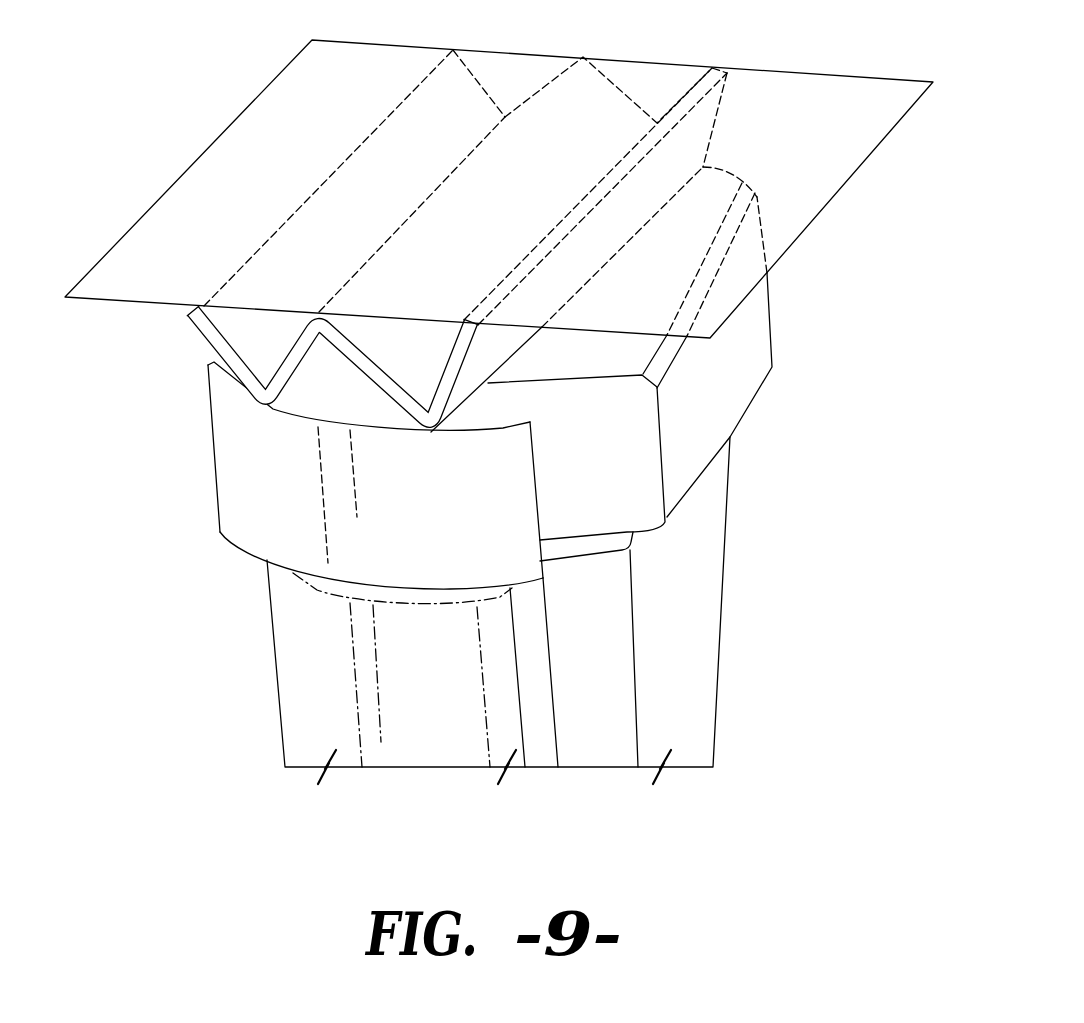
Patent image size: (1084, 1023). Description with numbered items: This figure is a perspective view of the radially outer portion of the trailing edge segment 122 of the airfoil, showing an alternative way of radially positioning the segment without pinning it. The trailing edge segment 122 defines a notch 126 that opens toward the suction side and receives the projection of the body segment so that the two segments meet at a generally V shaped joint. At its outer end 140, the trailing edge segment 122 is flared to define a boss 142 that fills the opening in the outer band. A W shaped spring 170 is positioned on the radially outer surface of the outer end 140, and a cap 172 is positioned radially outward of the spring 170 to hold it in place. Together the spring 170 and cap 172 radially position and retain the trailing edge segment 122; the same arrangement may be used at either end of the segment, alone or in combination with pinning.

The trailing edge segment 122 is at (682, 599).
The notch 126 is at (566, 721).
The outer end 140 is at (818, 332).
The boss 142 is at (242, 492).
The W shaped spring 170 is at (232, 323).
The cap 172 is at (287, 98).